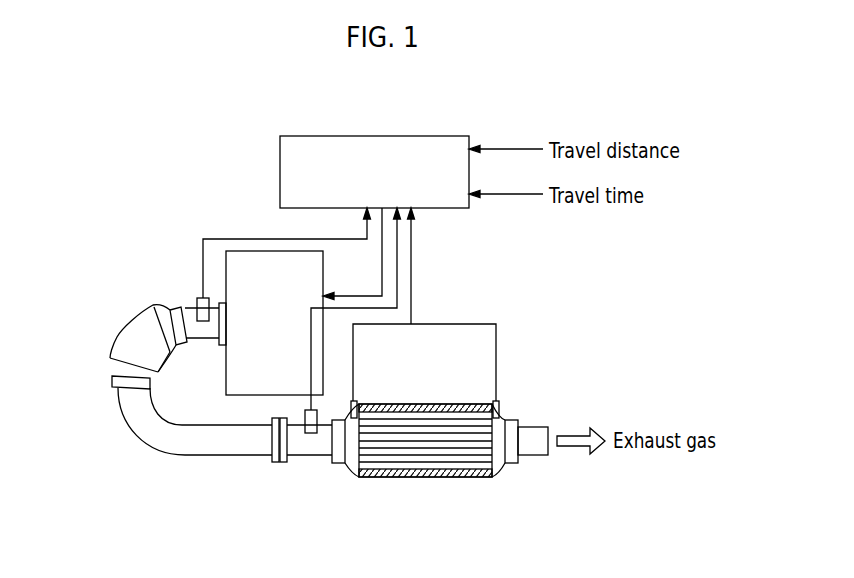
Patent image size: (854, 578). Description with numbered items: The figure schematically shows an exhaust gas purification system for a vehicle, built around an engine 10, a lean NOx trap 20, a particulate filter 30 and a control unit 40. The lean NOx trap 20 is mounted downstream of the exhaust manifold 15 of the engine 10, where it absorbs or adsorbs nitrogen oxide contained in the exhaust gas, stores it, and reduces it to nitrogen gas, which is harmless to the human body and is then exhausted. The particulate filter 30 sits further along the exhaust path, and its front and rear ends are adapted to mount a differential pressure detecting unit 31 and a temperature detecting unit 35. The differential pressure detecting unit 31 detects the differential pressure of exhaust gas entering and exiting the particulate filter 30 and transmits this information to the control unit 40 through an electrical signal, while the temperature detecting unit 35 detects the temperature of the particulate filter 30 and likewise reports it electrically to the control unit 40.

The engine 10 is at (243, 250).
The exhaust manifold 15 is at (190, 312).
The lean NOx trap 20 is at (122, 327).
The particulate filter 30 is at (426, 445).
The differential pressure detecting unit 31 is at (500, 400).
The temperature detecting unit 35 is at (199, 298).
The control unit 40 is at (373, 135).